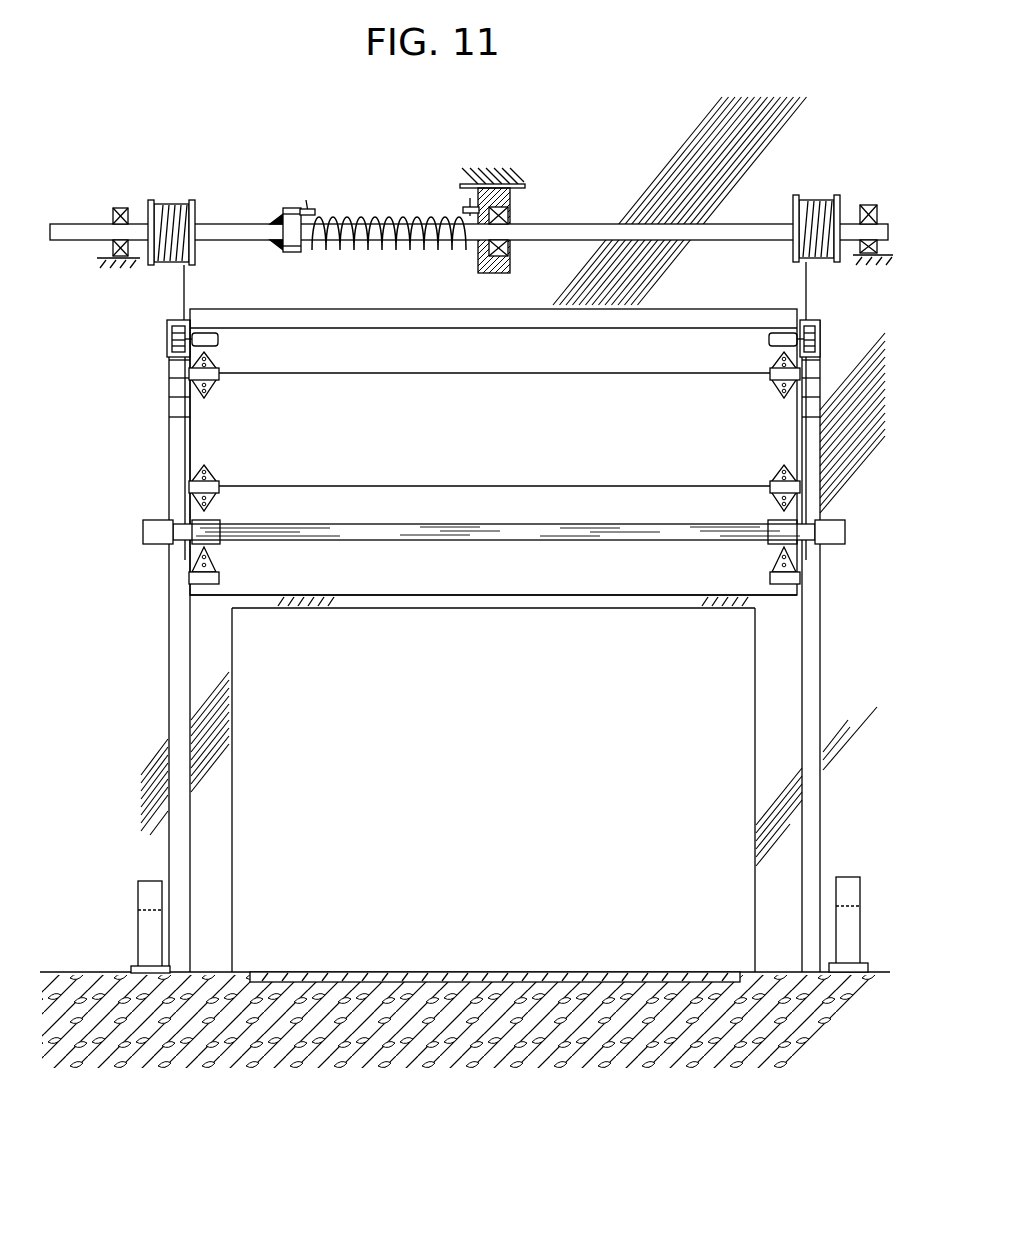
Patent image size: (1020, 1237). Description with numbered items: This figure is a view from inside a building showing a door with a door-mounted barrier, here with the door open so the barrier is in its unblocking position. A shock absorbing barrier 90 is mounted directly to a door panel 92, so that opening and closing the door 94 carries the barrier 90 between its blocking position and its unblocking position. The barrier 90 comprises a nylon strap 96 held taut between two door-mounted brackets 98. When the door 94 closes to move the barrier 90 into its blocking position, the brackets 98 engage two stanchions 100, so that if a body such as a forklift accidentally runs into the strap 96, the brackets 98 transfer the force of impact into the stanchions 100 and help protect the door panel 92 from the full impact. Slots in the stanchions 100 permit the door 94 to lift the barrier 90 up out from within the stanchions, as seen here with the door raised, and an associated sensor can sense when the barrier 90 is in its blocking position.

The shock absorbing barrier 90 is at (637, 541).
The door panel 92 is at (358, 596).
The door 94 is at (232, 425).
The nylon strap 96 is at (465, 542).
The door-mounted brackets 98 is at (157, 545).
The stanchions 100 is at (137, 931).